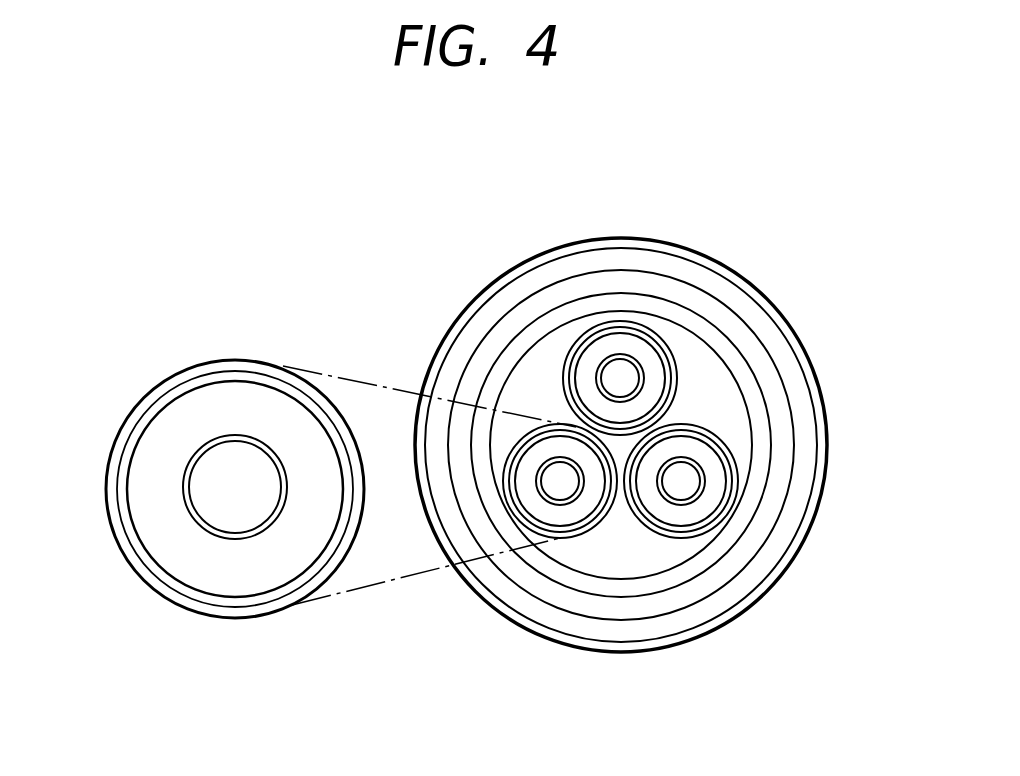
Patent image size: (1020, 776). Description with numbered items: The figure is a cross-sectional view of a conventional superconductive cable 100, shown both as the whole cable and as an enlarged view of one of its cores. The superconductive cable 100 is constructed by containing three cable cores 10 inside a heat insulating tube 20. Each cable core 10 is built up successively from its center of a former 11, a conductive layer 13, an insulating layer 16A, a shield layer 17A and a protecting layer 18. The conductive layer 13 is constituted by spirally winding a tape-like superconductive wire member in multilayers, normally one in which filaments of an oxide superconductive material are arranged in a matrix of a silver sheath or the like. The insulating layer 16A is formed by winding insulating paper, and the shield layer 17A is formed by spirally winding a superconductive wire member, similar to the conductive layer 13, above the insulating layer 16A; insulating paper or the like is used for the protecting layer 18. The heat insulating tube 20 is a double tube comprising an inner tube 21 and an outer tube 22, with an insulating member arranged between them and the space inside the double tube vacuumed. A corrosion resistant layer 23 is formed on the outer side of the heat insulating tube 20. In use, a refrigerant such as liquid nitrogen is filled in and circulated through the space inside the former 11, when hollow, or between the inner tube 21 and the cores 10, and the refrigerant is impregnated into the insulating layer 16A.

The superconductive cable 100 is at (616, 200).
The cable core 10 is at (568, 353).
The former 11 is at (210, 465).
The conductive layer 13 is at (185, 495).
The insulating layer 16A is at (172, 545).
The shield layer 17A is at (197, 593).
The protecting layer 18 is at (248, 608).
The heat insulating tube 20 is at (902, 320).
The inner tube 21 is at (730, 363).
The outer tube 22 is at (802, 440).
The corrosion resistant layer 23 is at (802, 552).